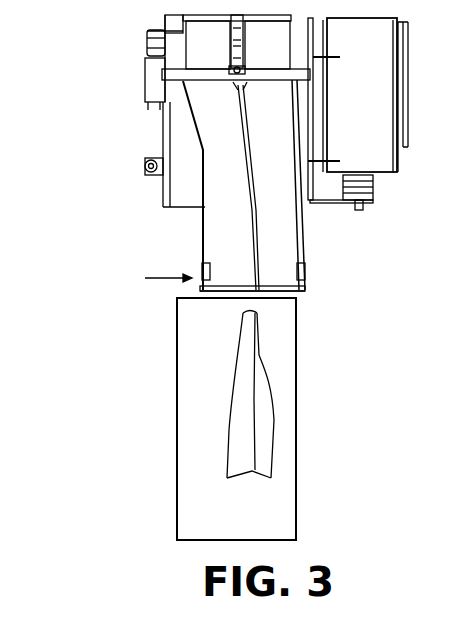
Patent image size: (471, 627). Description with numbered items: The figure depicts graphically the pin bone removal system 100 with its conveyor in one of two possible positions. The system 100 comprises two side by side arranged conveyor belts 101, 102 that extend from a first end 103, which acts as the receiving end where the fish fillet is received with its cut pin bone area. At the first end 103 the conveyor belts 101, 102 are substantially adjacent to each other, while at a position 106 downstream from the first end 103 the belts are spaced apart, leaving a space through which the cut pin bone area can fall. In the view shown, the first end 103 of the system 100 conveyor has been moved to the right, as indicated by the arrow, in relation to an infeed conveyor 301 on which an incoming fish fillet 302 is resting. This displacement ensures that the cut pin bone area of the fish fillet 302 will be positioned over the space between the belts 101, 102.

The system 100 is at (96, 100).
The conveyor belt 101 is at (246, 284).
The conveyor belt 102 is at (289, 284).
The first end 103 is at (336, 286).
The position 106 is at (238, 91).
The infeed conveyor 301 is at (297, 403).
The fish fillet 302 is at (258, 445).